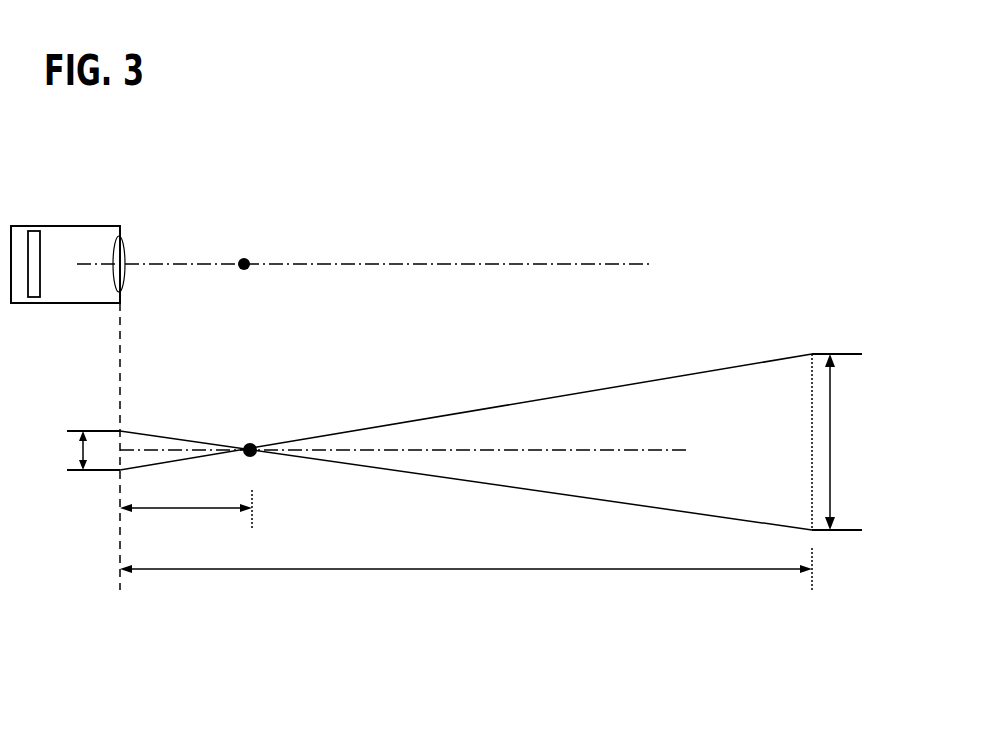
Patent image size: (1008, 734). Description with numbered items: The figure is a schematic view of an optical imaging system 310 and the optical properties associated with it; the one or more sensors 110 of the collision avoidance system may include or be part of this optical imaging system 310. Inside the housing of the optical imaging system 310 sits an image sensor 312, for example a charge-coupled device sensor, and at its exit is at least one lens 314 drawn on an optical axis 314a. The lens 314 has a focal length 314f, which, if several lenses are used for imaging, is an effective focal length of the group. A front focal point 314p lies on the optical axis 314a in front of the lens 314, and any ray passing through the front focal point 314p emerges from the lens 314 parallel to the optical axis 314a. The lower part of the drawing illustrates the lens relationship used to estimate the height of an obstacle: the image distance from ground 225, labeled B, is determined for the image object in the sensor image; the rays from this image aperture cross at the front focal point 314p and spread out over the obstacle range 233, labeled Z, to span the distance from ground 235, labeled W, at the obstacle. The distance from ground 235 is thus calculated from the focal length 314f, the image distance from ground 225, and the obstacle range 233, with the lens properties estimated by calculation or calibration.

The sensors 110 is at (90, 208).
The optical imaging system 310 is at (51, 226).
The image sensor 312 is at (39, 277).
The lens 314 is at (122, 265).
The optical axis 314a is at (524, 262).
The front focal point 314p is at (244, 264).
The focal length 314f is at (204, 512).
The image distance from ground 225 is at (97, 431).
The distance from ground 235 is at (836, 410).
The obstacle range 233 is at (340, 570).